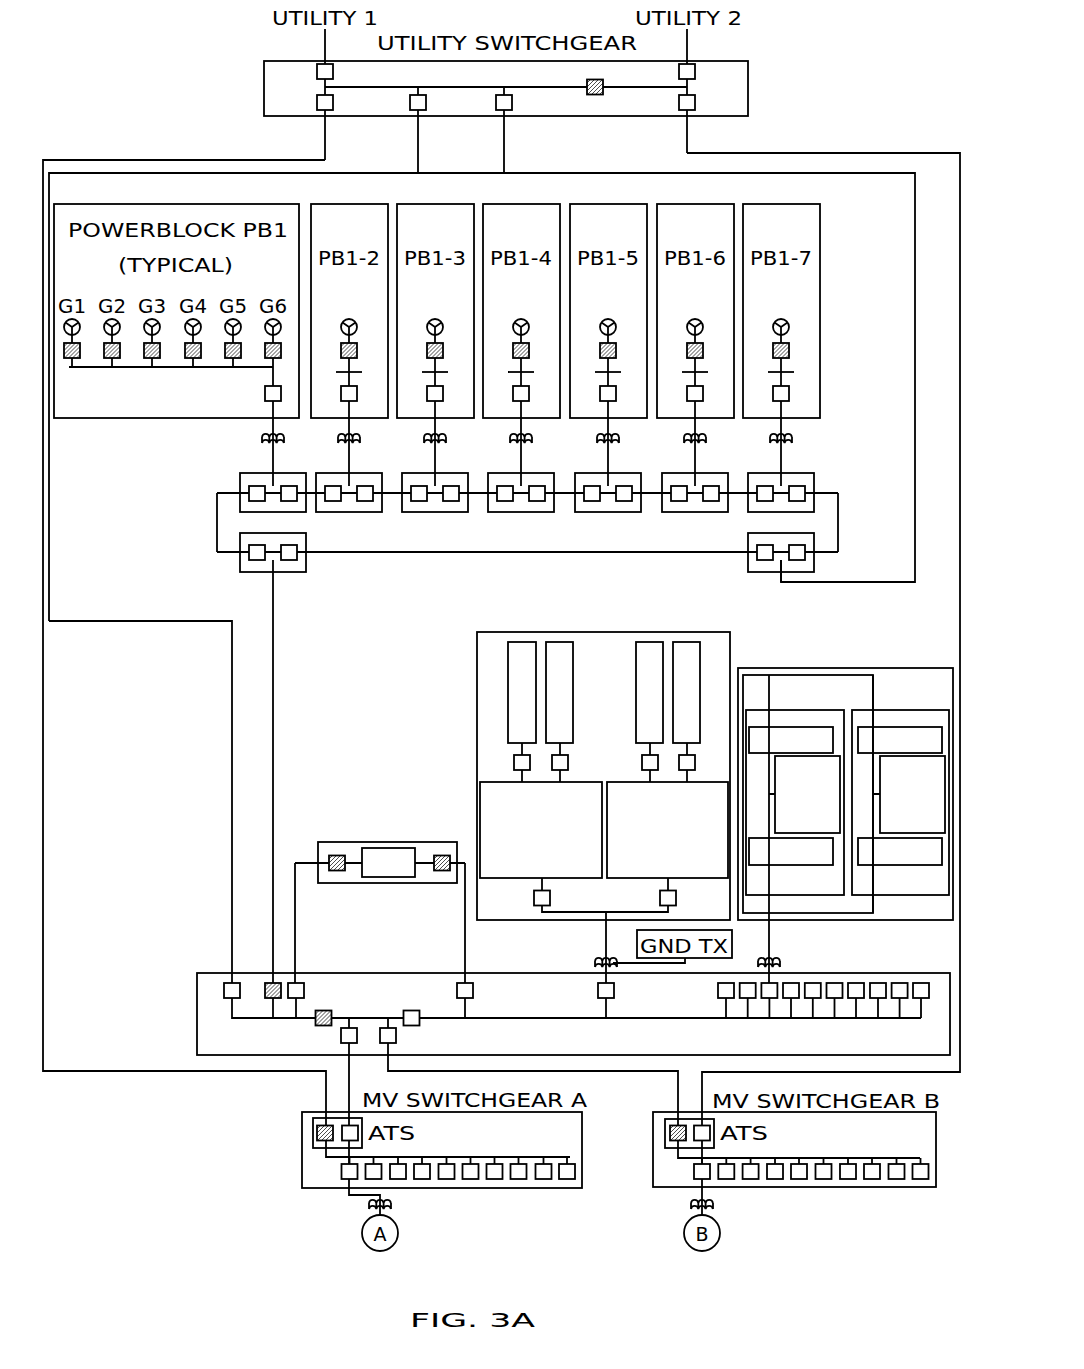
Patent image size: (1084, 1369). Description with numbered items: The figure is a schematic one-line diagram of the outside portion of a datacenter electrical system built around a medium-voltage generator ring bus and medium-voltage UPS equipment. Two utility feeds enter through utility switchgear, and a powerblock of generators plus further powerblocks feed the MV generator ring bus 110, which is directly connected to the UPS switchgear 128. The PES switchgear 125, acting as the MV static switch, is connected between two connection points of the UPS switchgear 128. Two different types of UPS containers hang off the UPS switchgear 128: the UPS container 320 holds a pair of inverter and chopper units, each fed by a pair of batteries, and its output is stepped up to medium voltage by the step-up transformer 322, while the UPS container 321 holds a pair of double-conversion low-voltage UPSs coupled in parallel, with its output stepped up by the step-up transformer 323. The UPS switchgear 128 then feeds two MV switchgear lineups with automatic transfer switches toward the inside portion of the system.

The MV generator ring bus 110 is at (840, 226).
The PES switchgear 125 is at (318, 848).
The UPS switchgear 128 is at (197, 1012).
The UPS container 320 is at (477, 695).
The UPS container 321 is at (895, 920).
The step-up transformer 322 is at (597, 962).
The step-up transformer 323 is at (778, 962).